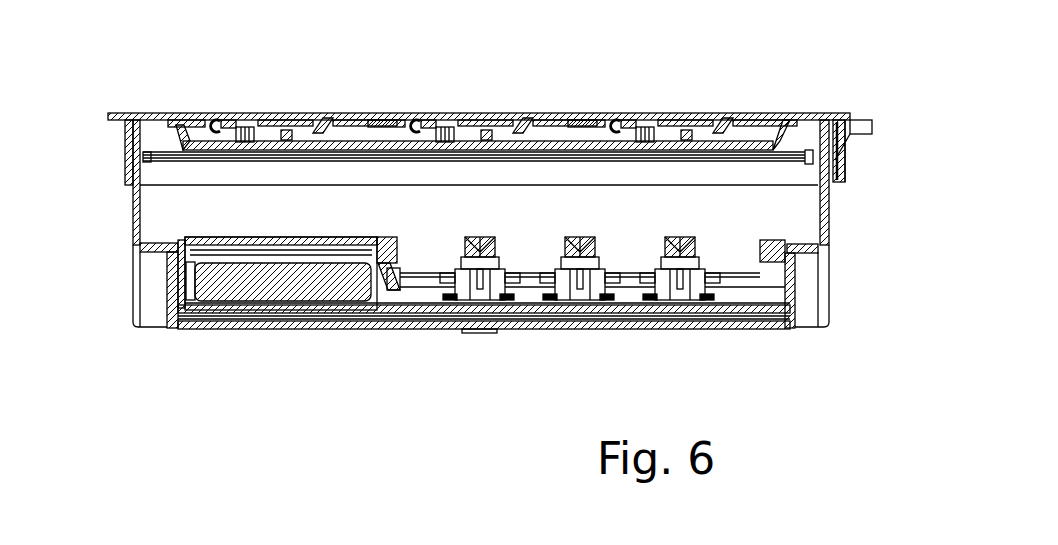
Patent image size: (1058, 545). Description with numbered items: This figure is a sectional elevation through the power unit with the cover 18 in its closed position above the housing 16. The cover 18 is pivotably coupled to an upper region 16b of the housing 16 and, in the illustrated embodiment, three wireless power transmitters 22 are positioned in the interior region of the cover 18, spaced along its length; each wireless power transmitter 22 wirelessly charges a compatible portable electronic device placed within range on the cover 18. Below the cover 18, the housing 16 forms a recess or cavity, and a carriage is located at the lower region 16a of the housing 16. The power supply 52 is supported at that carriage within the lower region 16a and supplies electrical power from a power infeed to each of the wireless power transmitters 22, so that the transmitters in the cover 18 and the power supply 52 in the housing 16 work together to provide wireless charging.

The housing 16 is at (128, 153).
The lower region of housing 16a is at (846, 253).
The upper region of housing 16b is at (884, 110).
The cover 18 is at (437, 112).
The wireless power transmitters 22 is at (342, 113).
The power supply 52 is at (360, 216).